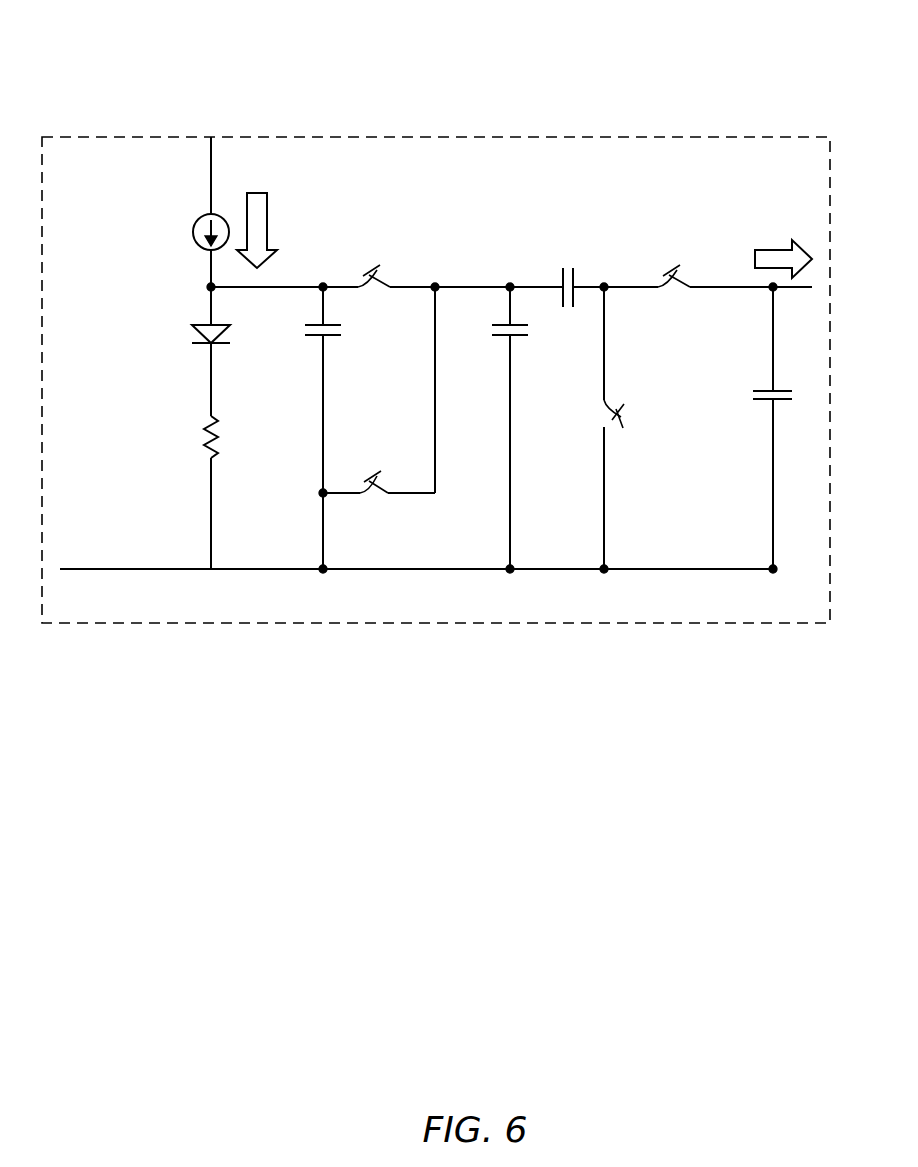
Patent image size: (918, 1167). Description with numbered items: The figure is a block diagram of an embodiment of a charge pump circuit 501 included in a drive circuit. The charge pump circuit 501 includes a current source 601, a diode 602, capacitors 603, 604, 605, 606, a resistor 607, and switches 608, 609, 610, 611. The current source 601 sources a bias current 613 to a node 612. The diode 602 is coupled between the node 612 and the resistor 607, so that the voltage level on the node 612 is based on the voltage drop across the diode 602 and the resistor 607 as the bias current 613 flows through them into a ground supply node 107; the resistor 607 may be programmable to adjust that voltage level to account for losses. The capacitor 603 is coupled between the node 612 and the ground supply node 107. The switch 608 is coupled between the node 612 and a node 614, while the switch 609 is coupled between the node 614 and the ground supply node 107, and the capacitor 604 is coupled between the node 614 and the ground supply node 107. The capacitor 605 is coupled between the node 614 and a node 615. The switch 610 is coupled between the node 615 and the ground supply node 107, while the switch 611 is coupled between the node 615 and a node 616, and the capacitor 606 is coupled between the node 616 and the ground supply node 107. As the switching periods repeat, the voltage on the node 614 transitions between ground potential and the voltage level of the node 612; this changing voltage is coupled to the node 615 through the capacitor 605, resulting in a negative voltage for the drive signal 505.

The charge pump circuit 501 is at (514, 137).
The ground supply node 107 is at (416, 541).
The current source 601 is at (192, 231).
The node 612 is at (210, 281).
The bias current 613 is at (270, 229).
The diode 602 is at (191, 336).
The resistor 607 is at (202, 446).
The capacitor 603 is at (315, 340).
The switch 608 is at (381, 300).
The switch 609 is at (380, 500).
The node 614 is at (468, 287).
The capacitor 604 is at (505, 340).
The capacitor 605 is at (567, 268).
The node 615 is at (629, 287).
The switch 611 is at (675, 292).
The switch 610 is at (604, 414).
The node 616 is at (772, 353).
The capacitor 606 is at (760, 402).
The drive signal 505 is at (768, 250).